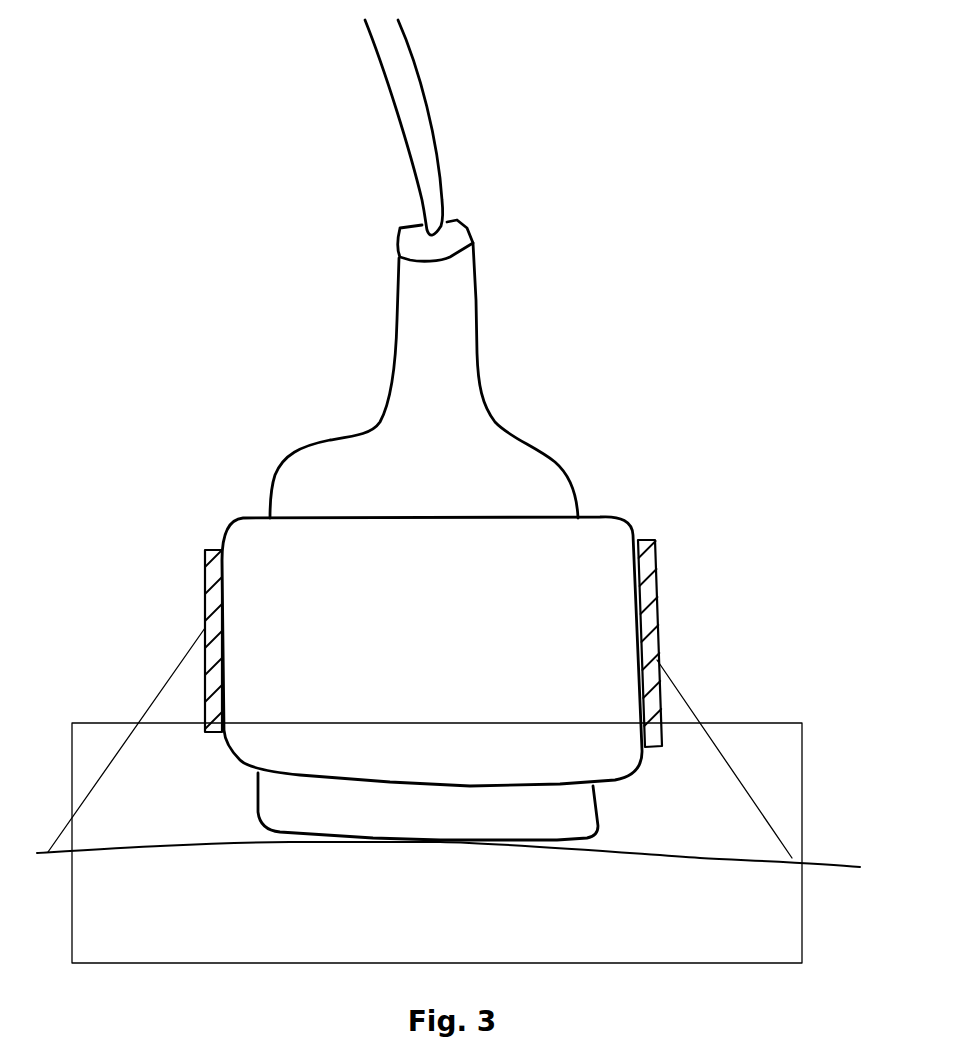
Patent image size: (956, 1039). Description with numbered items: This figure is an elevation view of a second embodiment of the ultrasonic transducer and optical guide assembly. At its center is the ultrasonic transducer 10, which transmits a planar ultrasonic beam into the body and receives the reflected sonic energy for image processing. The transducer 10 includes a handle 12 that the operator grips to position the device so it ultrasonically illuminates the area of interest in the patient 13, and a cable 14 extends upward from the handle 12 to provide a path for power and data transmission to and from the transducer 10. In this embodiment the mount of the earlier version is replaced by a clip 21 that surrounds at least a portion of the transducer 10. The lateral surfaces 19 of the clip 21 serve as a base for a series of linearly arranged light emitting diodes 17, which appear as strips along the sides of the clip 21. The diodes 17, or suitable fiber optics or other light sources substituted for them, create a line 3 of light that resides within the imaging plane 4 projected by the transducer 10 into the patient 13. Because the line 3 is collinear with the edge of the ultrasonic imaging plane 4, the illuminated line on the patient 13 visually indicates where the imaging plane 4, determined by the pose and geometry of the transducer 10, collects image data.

The line 3 is at (155, 700).
The imaging plane 4 is at (382, 943).
The ultrasonic transducer 10 is at (258, 793).
The handle 12 is at (457, 342).
The patient 13 is at (833, 860).
The cable 14 is at (418, 100).
The light emitting diodes 17 is at (655, 623).
The lateral surfaces 19 is at (222, 543).
The clip 21 is at (408, 618).